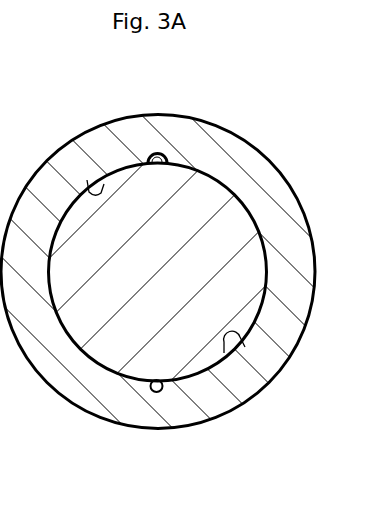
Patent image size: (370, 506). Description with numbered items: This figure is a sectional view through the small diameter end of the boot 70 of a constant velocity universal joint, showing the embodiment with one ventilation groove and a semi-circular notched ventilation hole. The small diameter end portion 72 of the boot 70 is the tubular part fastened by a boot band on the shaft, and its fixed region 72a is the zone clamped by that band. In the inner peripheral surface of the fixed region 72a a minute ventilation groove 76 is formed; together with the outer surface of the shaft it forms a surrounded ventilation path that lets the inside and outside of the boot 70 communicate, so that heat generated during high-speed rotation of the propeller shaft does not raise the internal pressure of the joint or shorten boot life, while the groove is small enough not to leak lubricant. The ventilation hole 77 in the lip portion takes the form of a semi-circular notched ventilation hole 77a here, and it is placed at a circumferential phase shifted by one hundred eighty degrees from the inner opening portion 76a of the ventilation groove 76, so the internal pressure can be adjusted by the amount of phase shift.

The boot 70 is at (268, 148).
The small diameter end portion 72 is at (54, 378).
The fixed region 72a is at (86, 189).
The ventilation groove 76 is at (166, 161).
The inner opening portion 76a is at (157, 170).
The ventilation hole 77 is at (245, 346).
The semi-circular notched ventilation hole 77a is at (150, 386).